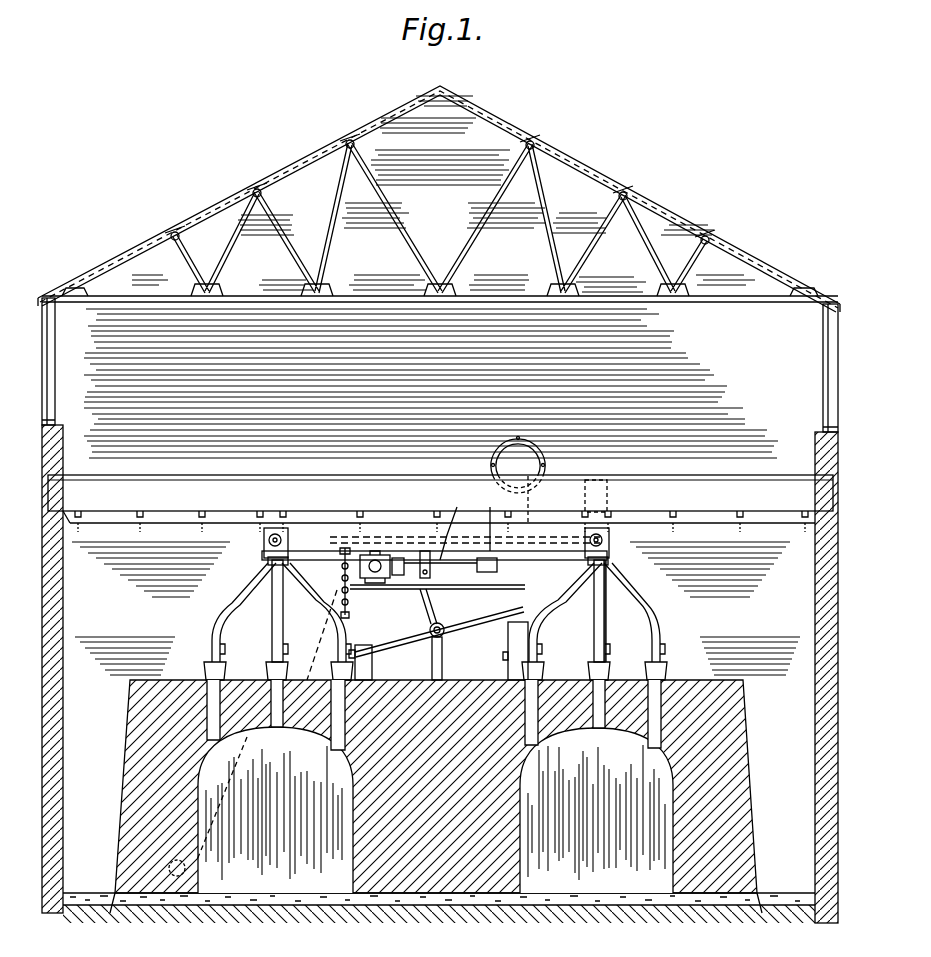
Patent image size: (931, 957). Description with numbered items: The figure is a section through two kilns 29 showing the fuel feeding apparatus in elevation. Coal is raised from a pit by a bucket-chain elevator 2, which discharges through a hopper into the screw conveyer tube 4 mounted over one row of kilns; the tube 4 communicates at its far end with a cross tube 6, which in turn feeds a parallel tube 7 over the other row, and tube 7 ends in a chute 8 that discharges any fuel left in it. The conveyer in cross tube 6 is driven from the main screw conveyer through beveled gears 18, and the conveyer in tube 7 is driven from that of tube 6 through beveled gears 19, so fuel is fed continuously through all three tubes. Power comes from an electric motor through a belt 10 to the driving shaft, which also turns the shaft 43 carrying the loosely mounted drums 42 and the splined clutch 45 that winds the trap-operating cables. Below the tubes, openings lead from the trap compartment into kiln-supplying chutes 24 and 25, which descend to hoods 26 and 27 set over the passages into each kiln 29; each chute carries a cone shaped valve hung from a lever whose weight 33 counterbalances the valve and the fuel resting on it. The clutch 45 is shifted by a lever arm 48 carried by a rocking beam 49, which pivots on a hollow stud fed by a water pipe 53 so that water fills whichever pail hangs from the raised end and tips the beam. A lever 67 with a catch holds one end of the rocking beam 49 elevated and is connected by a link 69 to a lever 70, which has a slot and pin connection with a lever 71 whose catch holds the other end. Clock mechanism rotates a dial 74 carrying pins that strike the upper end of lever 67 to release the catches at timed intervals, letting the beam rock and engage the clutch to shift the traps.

The rotatable dial 74 is at (518, 465).
The link 69 is at (366, 510).
The lever 67 is at (534, 500).
The bucket-chain elevator 2 is at (608, 500).
The clutch 45 is at (452, 525).
The tube 7 is at (262, 540).
The screw conveyer tube 4 is at (609, 540).
The lever 70 is at (338, 541).
The cross tube 6 is at (580, 556).
The beveled gears 18 is at (609, 560).
The beveled gears 19 is at (268, 556).
The kiln-supplying chute 24 is at (272, 631).
The kiln-supplying chute 25 is at (212, 612).
The weight 33 is at (271, 650).
The hood 26 is at (266, 673).
The hood 27 is at (205, 673).
The lever 71 is at (340, 589).
The drums 42 is at (382, 598).
The shaft 43 is at (450, 567).
The lever arm 48 is at (434, 602).
The rocking beam 49 is at (485, 622).
The water pipe 53 is at (442, 658).
The chute 8 is at (293, 637).
The kiln 29 is at (435, 810).
The belt 10 is at (204, 858).